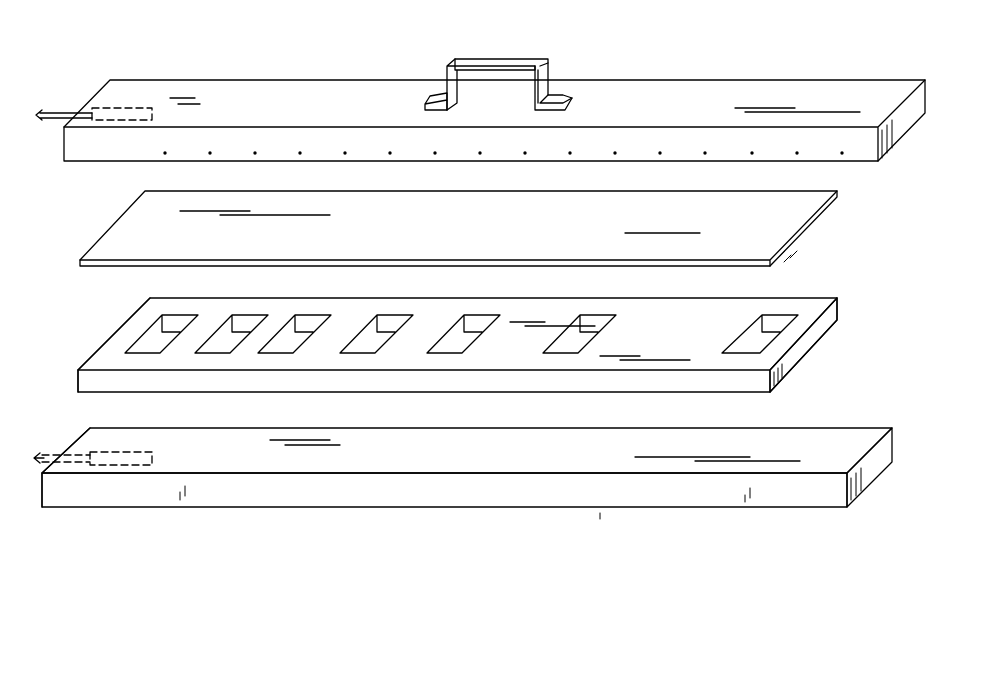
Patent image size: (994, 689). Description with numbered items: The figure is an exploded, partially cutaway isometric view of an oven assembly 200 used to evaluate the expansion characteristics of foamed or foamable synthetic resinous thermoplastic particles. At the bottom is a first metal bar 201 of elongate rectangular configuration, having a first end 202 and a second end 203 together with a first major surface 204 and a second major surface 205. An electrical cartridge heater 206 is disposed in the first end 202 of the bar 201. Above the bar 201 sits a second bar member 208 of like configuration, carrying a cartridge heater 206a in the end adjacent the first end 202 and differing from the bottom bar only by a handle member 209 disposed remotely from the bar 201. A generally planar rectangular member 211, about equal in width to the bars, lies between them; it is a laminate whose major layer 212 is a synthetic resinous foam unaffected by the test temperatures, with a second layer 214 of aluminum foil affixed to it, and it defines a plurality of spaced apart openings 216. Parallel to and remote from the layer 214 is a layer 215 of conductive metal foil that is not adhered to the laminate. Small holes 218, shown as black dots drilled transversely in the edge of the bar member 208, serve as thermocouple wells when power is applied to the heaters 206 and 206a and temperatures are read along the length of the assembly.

The oven assembly 200 is at (190, 60).
The first metal bar 201 is at (470, 475).
The first end 202 is at (73, 495).
The second end 203 is at (815, 495).
The first major surface 204 is at (835, 440).
The second major surface 205 is at (695, 492).
The electrical cartridge heater 206 is at (97, 452).
The cartridge heater 206a is at (95, 95).
The second bar member 208 is at (292, 90).
The handle member 209 is at (525, 62).
The planar rectangular member 211 is at (467, 328).
The major layer 212 is at (85, 378).
The second layer 214 is at (806, 357).
The layer of conductive metal foil 215 is at (783, 223).
The openings 216 is at (310, 320).
The holes 218 is at (752, 153).